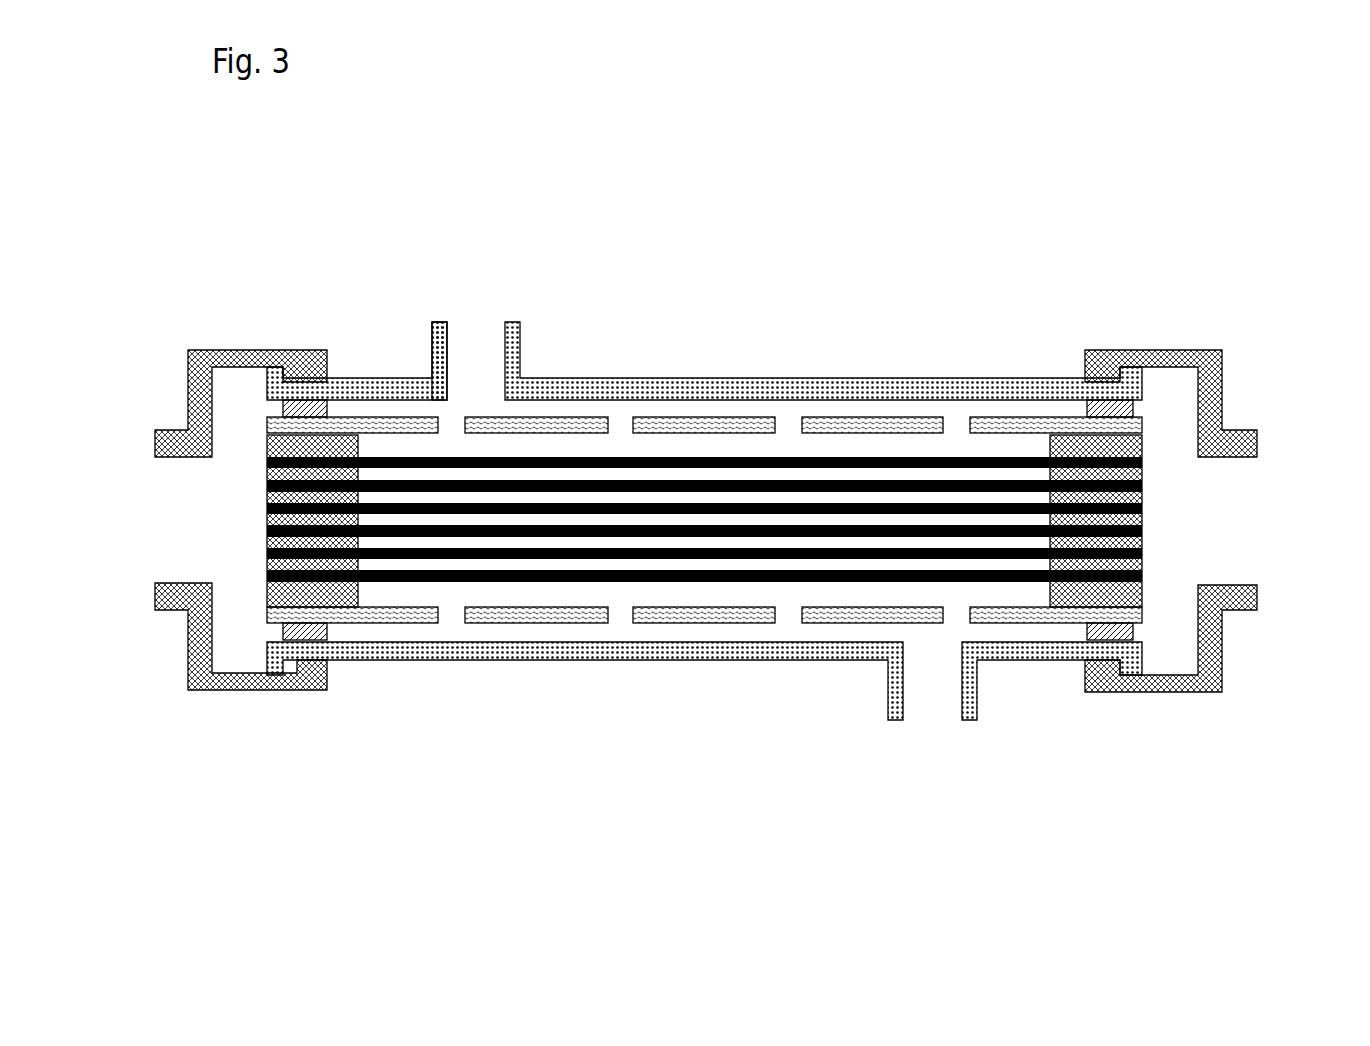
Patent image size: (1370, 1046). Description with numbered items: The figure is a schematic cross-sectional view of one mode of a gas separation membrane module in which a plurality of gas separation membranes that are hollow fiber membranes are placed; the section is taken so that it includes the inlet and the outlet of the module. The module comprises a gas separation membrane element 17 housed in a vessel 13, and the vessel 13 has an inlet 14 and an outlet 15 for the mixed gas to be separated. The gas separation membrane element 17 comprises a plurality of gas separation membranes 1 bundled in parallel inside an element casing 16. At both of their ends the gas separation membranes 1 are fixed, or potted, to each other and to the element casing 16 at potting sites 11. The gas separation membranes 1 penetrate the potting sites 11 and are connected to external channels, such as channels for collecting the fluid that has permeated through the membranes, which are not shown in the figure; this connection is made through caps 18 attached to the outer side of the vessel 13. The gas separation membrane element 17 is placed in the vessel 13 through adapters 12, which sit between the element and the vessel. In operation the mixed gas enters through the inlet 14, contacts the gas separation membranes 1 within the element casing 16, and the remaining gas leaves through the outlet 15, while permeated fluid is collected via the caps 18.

The gas separation membrane 1 is at (654, 646).
The potting site 11 is at (293, 597).
The adapter 12 is at (1107, 637).
The vessel 13 is at (877, 382).
The inlet 14 is at (472, 325).
The outlet 15 is at (937, 698).
The element casing 16 is at (700, 613).
The gas separation membrane element 17 is at (613, 845).
The cap 18 is at (1210, 410).